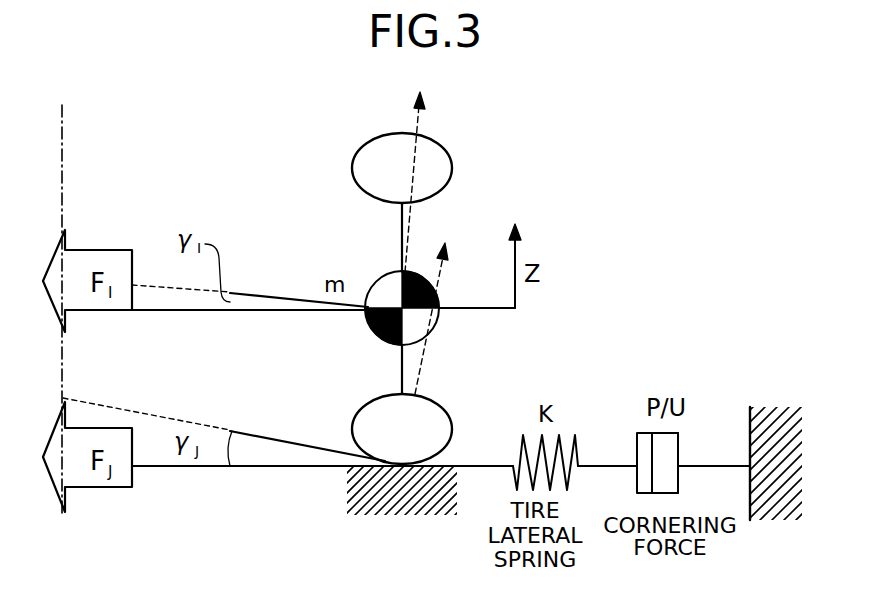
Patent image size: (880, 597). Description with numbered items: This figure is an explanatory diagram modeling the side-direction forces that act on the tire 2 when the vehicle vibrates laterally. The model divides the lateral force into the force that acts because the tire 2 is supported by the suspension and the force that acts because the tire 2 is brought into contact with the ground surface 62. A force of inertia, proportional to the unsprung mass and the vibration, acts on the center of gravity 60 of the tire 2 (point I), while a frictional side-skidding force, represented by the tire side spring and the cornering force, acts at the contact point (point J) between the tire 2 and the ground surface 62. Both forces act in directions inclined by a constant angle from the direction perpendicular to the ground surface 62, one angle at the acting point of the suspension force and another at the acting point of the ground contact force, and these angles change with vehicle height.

The tire 2 is at (388, 136).
The center of gravity 60 is at (390, 273).
The ground surface 62 is at (360, 490).